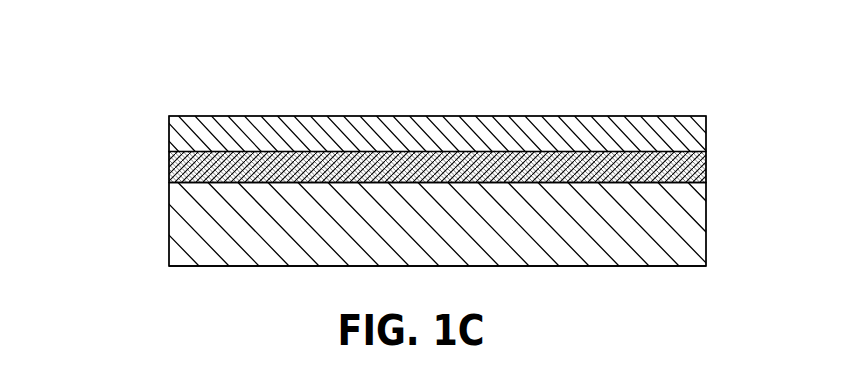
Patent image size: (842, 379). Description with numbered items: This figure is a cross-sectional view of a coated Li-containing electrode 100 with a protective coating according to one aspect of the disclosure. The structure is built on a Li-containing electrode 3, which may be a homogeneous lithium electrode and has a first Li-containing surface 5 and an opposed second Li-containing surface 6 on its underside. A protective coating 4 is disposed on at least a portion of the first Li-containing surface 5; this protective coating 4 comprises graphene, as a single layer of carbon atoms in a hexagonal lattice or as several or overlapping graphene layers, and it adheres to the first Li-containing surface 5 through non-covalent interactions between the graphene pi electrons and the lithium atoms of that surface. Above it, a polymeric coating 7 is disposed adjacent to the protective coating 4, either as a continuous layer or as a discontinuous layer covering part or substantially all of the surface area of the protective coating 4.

The coated Li-containing electrode 100 is at (104, 75).
The polymeric coating 7 is at (283, 138).
The protective coating 4 is at (708, 162).
The first Li-containing surface 5 is at (185, 196).
The Li-containing electrode 3 is at (185, 226).
The second Li-containing surface 6 is at (170, 232).